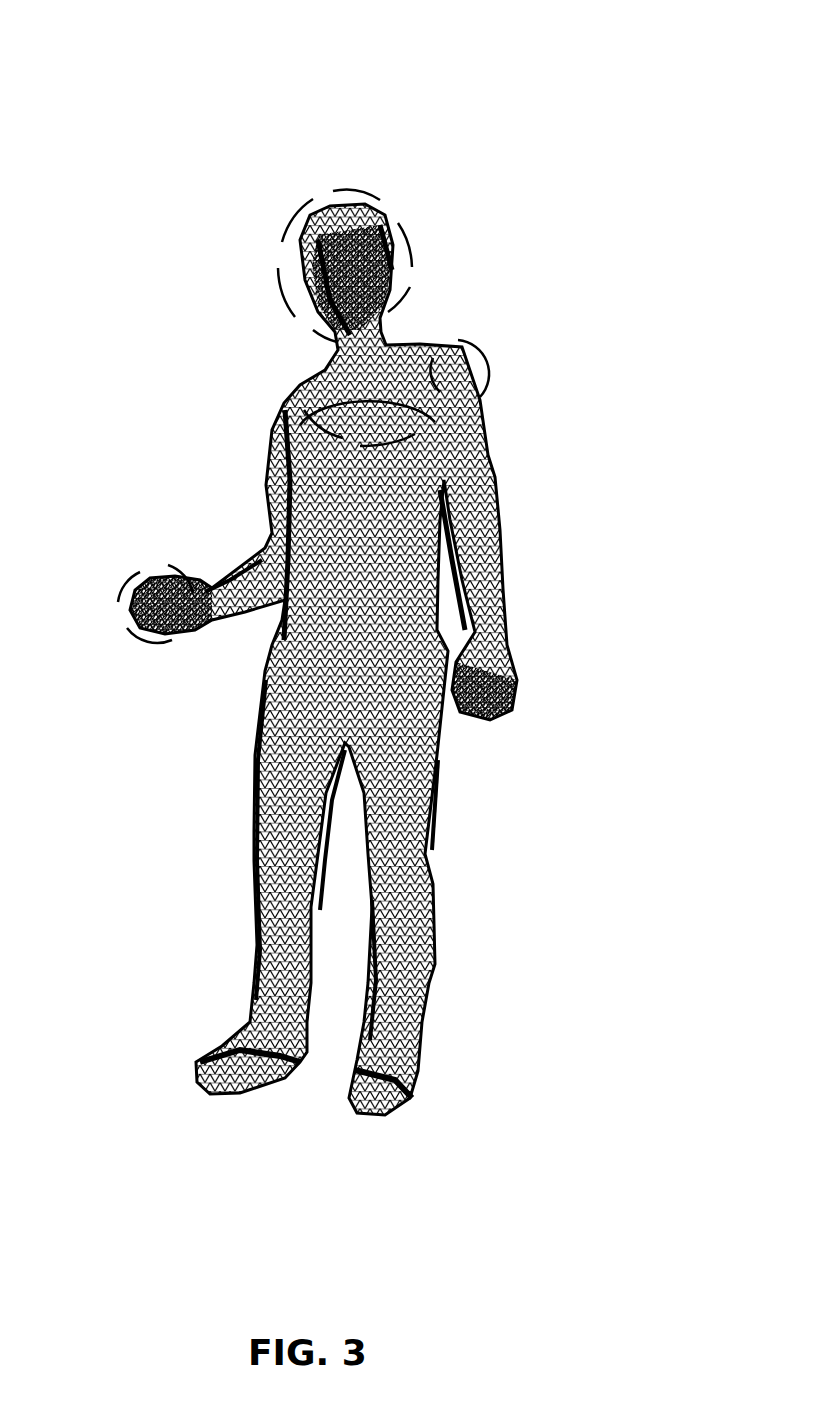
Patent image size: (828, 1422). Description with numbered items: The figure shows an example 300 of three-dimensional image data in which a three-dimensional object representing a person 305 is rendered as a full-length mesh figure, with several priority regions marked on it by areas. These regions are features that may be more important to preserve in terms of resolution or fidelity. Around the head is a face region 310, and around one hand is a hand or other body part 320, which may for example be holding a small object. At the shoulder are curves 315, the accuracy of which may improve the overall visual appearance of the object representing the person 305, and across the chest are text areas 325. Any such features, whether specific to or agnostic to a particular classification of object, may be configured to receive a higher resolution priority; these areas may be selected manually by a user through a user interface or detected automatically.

The example 300 is at (592, 52).
The 3D object representing a person 305 is at (269, 444).
The face region 310 is at (308, 207).
The curves 315 is at (497, 343).
The hand or other body part 320 is at (142, 565).
The text areas 325 is at (323, 390).